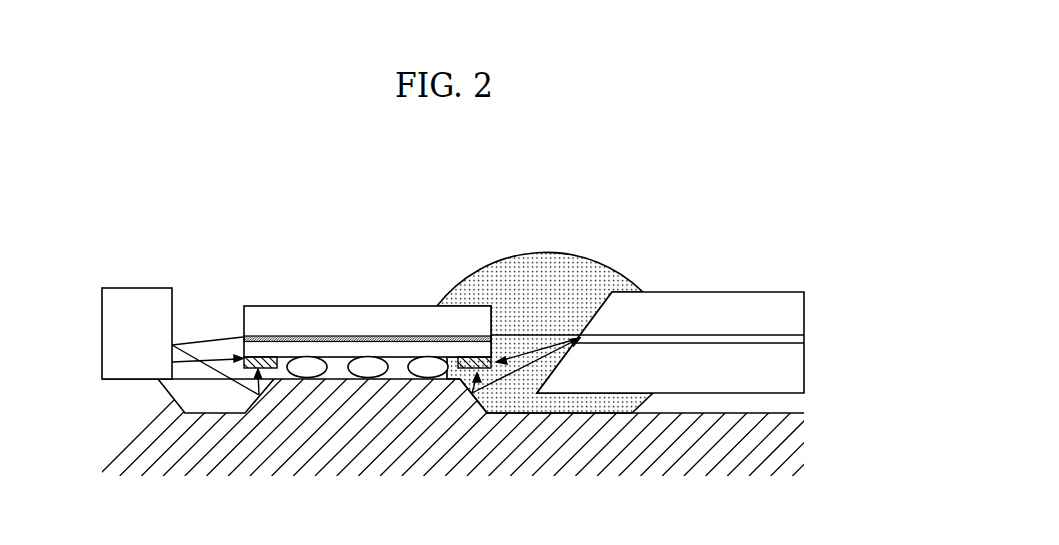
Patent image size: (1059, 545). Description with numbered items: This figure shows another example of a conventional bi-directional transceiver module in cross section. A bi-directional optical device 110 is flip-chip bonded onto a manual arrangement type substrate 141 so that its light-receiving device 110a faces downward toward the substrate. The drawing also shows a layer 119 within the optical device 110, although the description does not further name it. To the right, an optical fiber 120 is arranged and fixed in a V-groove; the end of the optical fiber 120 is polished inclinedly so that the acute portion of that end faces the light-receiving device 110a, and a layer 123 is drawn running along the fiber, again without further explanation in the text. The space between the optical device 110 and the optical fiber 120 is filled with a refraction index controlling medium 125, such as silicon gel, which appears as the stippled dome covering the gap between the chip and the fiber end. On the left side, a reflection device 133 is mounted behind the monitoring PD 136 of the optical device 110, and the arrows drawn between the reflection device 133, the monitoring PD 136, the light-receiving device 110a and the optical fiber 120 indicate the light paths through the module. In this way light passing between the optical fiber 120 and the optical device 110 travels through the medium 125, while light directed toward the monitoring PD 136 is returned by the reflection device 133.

The bi-directional optical device 110 is at (353, 306).
The light-receiving device 110a is at (481, 366).
The light sensing layer 119 is at (415, 336).
The optical fiber 120 is at (772, 292).
The wiring pattern 123 is at (693, 335).
The refraction index controlling medium 125 is at (554, 255).
The reflection device 133 is at (140, 288).
The monitoring PD 136 is at (260, 357).
The manual arrangement type substrate 141 is at (452, 458).